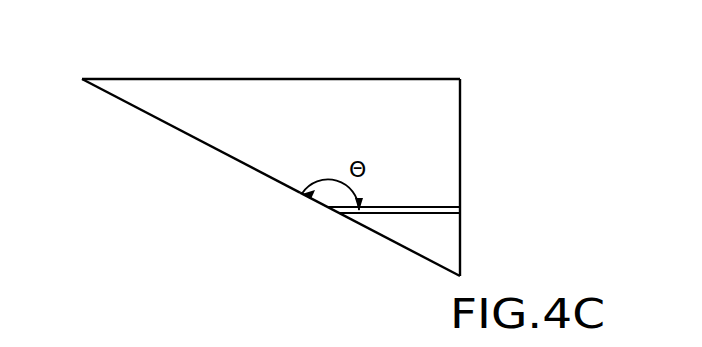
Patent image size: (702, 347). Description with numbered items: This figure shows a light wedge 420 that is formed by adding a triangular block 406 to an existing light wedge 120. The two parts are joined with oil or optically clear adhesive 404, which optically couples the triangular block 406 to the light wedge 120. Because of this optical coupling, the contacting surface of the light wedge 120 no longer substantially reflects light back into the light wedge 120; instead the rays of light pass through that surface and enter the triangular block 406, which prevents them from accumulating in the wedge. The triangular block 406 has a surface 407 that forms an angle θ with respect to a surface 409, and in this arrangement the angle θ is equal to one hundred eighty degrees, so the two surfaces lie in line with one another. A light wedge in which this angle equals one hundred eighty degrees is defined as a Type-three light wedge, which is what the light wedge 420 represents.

The light wedge 120 is at (242, 124).
The light wedge 420 is at (340, 70).
The oil or optically clear adhesive 404 is at (460, 208).
The triangular block 406 is at (453, 247).
The surface 407 is at (368, 232).
The surface 409 is at (203, 142).